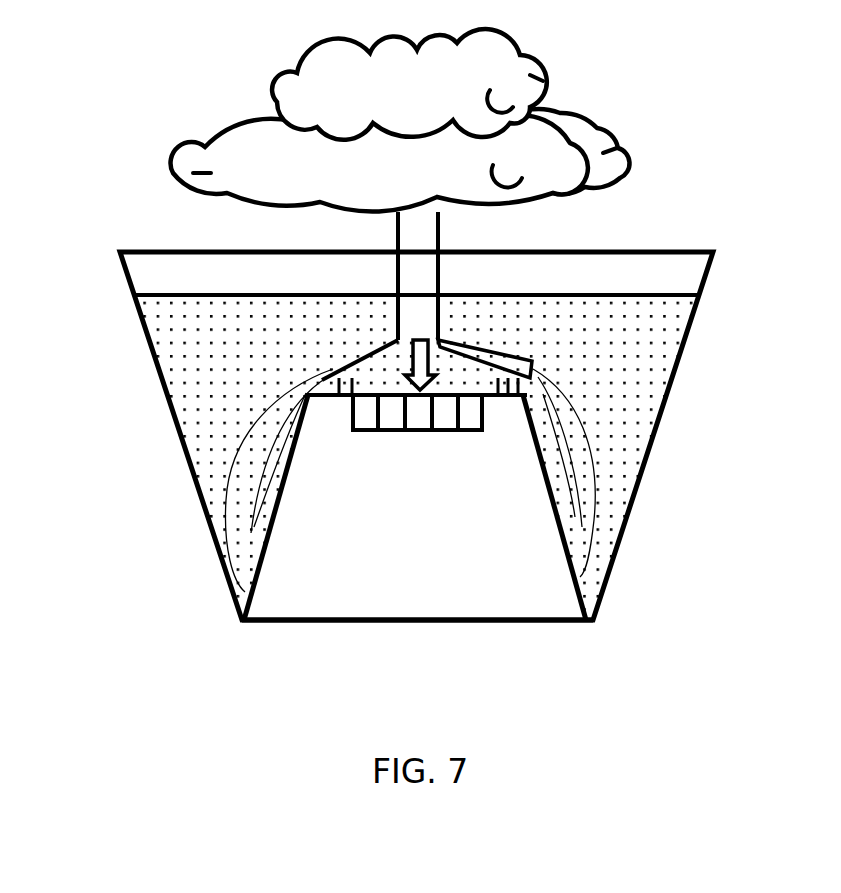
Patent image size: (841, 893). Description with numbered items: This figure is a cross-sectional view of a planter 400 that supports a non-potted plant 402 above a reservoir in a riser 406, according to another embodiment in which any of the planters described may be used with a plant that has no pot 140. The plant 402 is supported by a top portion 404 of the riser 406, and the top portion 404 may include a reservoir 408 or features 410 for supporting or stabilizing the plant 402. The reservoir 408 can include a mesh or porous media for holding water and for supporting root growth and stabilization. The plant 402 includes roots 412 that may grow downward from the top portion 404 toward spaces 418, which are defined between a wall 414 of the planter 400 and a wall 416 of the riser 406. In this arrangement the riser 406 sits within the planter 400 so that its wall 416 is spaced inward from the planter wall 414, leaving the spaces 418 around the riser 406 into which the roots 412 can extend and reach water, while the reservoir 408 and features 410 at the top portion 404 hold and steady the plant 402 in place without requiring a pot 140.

The planter 400 is at (130, 246).
The plant 402 is at (595, 140).
The pot 140 is at (533, 360).
The wall of the planter 414 is at (683, 350).
The roots 412 is at (270, 440).
The spaces 418 is at (655, 552).
The top portion of the riser 404 is at (322, 398).
The riser 406 is at (392, 540).
The reservoir 408 is at (365, 413).
The features 410 is at (492, 397).
The wall of the riser 416 is at (578, 583).